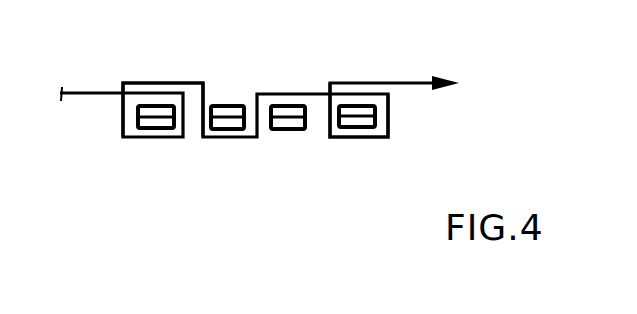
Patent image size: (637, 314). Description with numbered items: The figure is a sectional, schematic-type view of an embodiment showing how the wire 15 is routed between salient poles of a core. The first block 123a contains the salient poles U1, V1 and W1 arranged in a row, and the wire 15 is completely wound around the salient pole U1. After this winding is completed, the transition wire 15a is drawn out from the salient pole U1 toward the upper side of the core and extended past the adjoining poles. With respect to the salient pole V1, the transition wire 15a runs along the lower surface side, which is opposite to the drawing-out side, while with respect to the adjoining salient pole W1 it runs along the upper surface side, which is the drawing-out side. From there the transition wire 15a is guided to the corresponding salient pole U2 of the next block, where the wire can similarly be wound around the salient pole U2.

The wire 15 is at (88, 92).
The transition wire 15a is at (312, 92).
The salient pole U1 is at (158, 119).
The salient pole V1 is at (235, 128).
The salient pole W1 is at (292, 125).
The salient pole U2 is at (375, 154).
The first block 123a is at (271, 184).